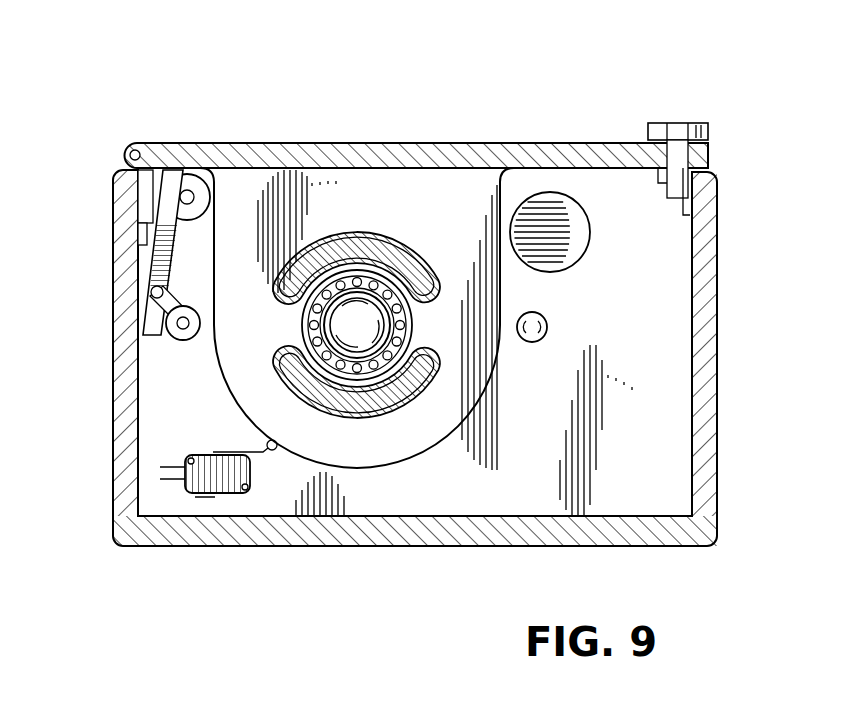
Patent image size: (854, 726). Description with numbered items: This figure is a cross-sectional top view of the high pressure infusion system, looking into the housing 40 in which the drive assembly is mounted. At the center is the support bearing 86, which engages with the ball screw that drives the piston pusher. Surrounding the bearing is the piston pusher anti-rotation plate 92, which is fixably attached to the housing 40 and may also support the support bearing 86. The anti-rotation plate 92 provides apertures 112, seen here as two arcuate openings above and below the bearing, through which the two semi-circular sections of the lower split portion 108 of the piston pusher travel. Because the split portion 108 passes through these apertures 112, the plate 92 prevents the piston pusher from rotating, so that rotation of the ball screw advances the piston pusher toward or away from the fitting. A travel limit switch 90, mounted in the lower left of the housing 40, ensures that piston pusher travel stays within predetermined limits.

The housing 40 is at (615, 549).
The support bearing 86 is at (297, 333).
The travel limit switch 90 is at (215, 497).
The piston pusher anti-rotation plate 92 is at (257, 180).
The lower split portion 108 is at (270, 336).
The apertures 112 is at (345, 233).